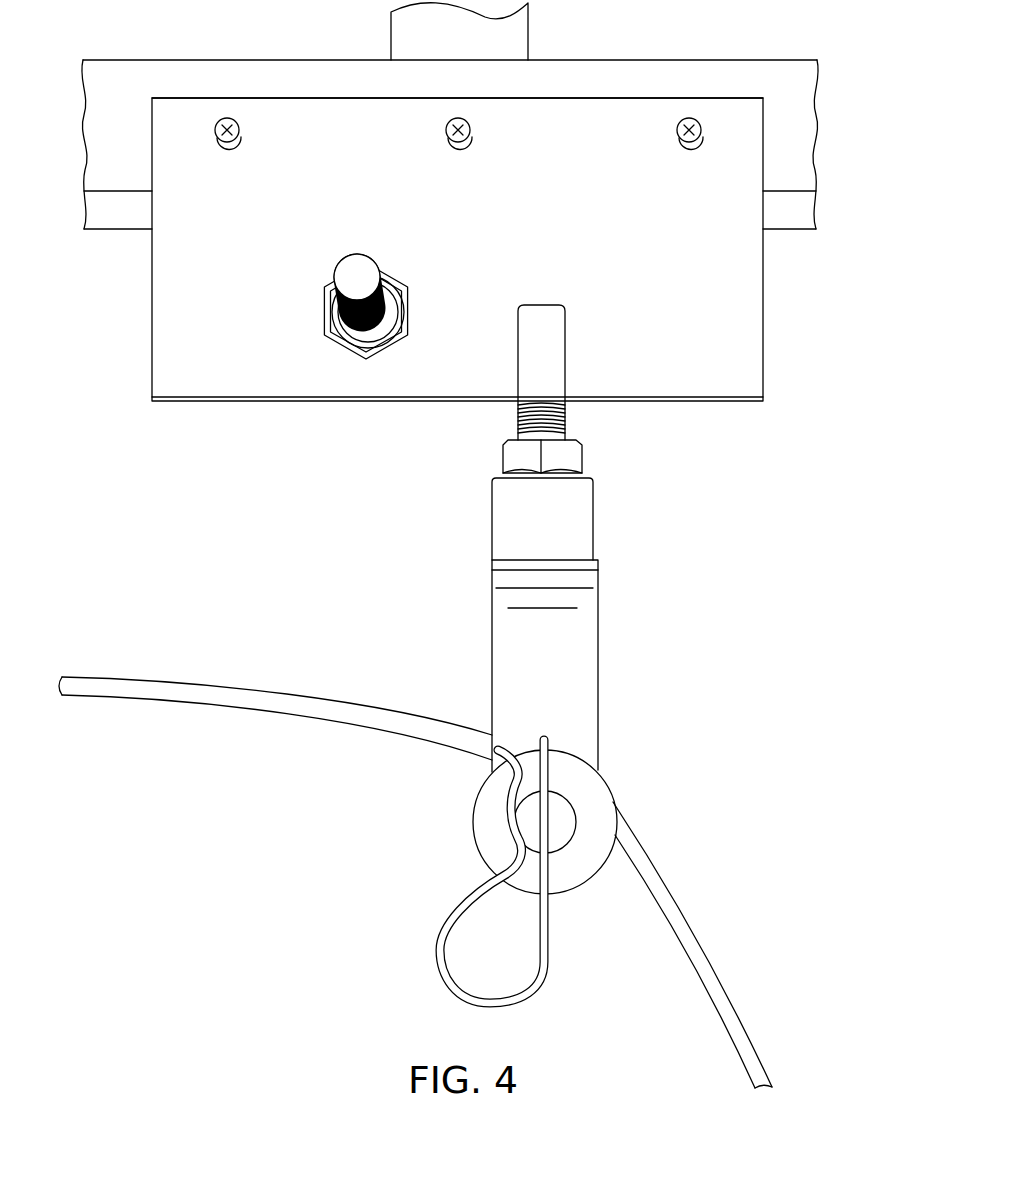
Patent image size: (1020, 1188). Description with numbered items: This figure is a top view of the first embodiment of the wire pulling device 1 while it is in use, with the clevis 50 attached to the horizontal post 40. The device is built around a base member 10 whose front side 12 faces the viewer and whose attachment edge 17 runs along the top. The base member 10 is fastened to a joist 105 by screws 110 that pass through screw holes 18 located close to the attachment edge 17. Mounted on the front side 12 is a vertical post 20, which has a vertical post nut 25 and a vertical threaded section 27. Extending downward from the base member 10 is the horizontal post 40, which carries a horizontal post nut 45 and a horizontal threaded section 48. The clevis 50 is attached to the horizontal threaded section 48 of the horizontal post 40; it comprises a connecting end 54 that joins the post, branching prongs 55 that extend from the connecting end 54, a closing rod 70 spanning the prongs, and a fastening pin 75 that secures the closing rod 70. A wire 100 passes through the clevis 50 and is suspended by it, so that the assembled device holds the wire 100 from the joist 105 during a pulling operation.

The wire pulling device 1 is at (825, 354).
The base member 10 is at (408, 240).
The front side 12 is at (206, 370).
The attachment edge 17 is at (616, 97).
The screw holes 18 is at (455, 106).
The screws 110 is at (454, 117).
The joist 105 is at (806, 134).
The vertical post 20 is at (359, 346).
The vertical post nut 25 is at (385, 345).
The vertical threaded section 27 is at (340, 306).
The horizontal post 40 is at (557, 389).
The horizontal post nut 45 is at (515, 455).
The horizontal threaded section 48 is at (517, 418).
The clevis 50 is at (583, 625).
The connecting end 54 is at (548, 518).
The branching prongs 55 is at (555, 622).
The closing rod 70 is at (546, 820).
The fastening pin 75 is at (535, 982).
The wire 100 is at (312, 700).